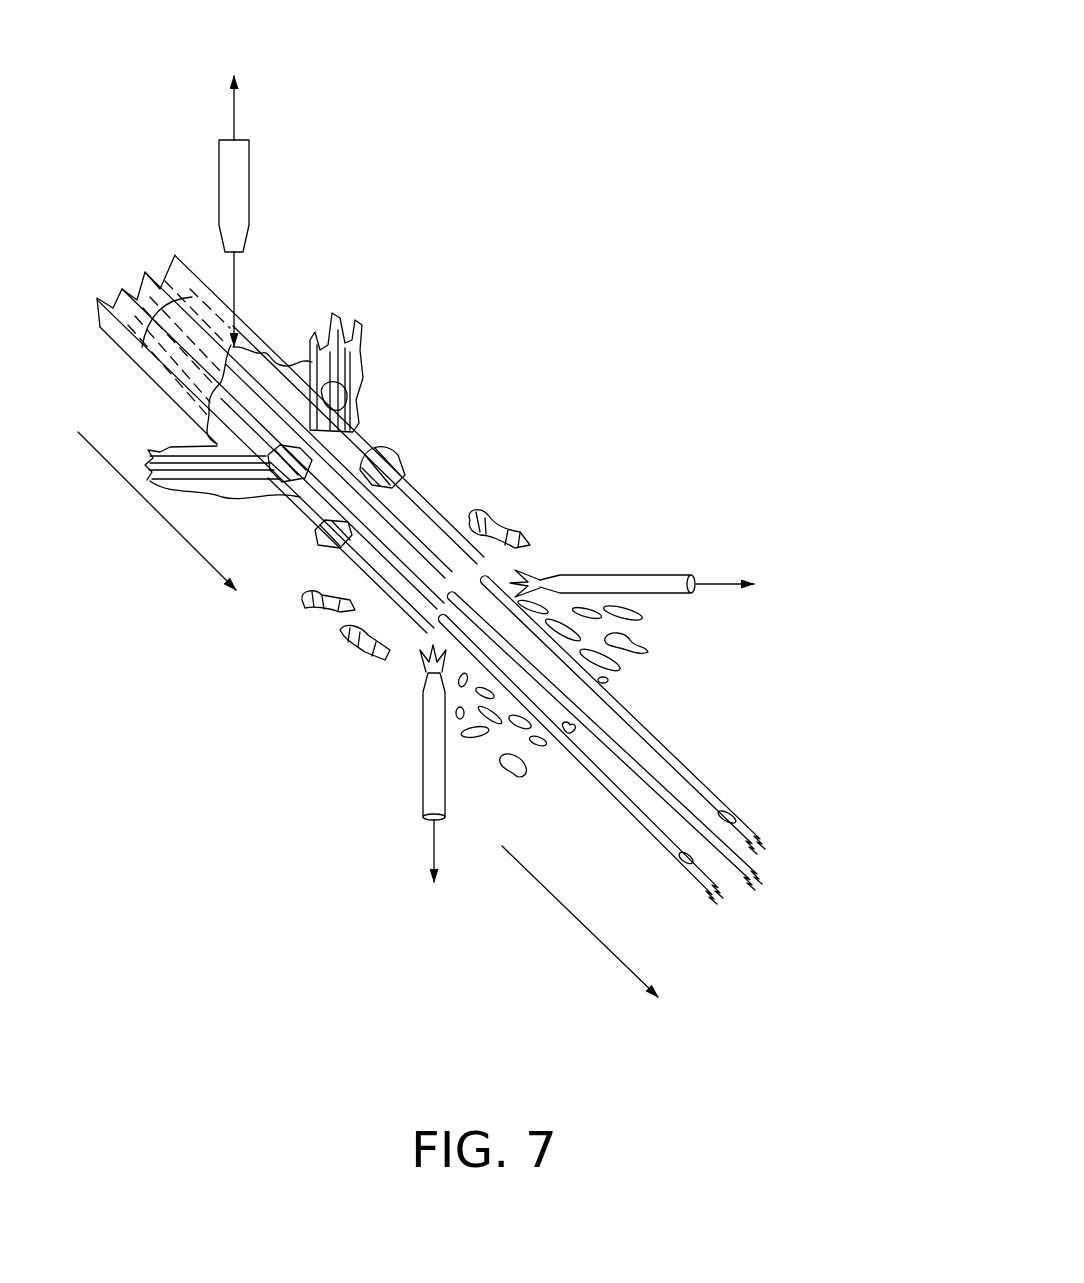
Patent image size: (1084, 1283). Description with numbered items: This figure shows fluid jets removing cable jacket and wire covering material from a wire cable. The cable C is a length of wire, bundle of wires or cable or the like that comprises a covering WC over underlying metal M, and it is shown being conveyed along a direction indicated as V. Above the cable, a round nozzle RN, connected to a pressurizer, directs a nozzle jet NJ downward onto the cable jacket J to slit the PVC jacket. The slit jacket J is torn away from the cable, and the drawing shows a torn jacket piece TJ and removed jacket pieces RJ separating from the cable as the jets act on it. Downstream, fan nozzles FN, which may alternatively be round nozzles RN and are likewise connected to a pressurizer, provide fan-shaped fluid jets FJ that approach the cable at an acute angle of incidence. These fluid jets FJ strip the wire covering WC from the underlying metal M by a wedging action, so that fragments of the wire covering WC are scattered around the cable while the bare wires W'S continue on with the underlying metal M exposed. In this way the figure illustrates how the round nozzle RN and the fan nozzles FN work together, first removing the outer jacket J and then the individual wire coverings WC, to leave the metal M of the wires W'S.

The round nozzle RN is at (208, 178).
The nozzle jet NJ is at (242, 284).
The cable jacket J is at (150, 443).
The torn jacket piece TJ is at (343, 392).
The removed jacket pieces RJ is at (330, 448).
The wire covering WC is at (415, 535).
The cable C is at (642, 447).
The fluid jet FJ is at (414, 658).
The fan nozzle FN is at (417, 755).
The velocity direction V is at (368, 714).
The wires W'S is at (431, 580).
The underlying metal M is at (668, 832).